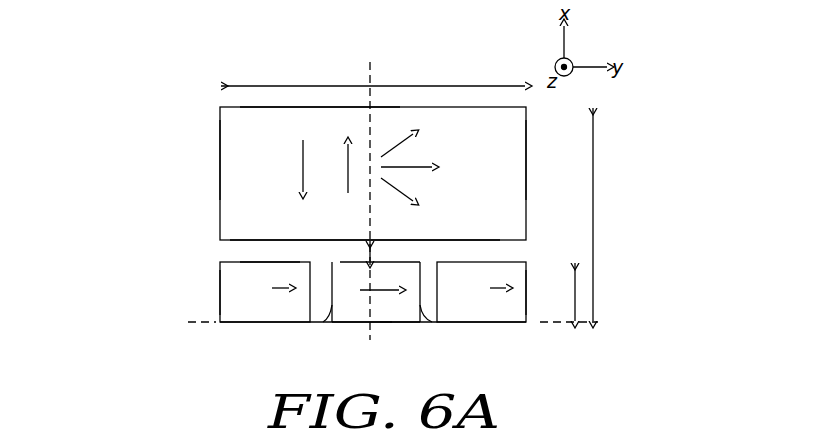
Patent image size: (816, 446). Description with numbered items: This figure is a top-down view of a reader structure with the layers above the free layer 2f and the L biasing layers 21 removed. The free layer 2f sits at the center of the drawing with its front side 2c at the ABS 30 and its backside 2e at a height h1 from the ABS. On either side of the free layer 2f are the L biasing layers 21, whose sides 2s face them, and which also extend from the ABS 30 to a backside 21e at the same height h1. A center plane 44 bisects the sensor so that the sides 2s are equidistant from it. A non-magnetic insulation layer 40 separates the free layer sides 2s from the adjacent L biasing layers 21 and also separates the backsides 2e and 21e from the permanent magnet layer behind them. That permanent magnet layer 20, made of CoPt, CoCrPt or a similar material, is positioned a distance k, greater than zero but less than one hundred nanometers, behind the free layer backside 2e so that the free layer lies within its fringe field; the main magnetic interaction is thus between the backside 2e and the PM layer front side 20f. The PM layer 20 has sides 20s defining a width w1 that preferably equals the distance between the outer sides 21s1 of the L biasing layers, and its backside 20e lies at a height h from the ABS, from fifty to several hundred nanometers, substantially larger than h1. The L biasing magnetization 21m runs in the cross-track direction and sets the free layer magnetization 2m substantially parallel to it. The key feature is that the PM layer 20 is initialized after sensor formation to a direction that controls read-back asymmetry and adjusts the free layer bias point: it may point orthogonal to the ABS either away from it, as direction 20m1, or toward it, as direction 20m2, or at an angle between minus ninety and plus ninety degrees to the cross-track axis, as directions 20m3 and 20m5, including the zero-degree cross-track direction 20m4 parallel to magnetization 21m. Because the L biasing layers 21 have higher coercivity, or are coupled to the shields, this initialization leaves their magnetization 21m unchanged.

The permanent magnet layer 20 is at (513, 199).
The PM layer backside 20e is at (240, 107).
The PM layer sides 20s is at (220, 148).
The PM layer front side 20f is at (265, 241).
The PM magnetization direction pointing away from ABS 20m1 is at (347, 156).
The PM magnetization direction pointing toward ABS 20m2 is at (302, 178).
The PM magnetization direction at positive angle to cross-track direction 20m3 is at (427, 139).
The PM magnetization direction in cross-track direction 20m4 is at (436, 168).
The PM magnetization direction at negative angle to cross-track direction 20m5 is at (424, 198).
The insulation layer 40 is at (265, 245).
The center plane 44 is at (370, 205).
The L biasing layers 21 is at (243, 312).
The L biasing layer backside 21e is at (250, 262).
The outer sides of L biasing layers 21s1 is at (220, 294).
The L biasing magnetization 21m is at (371, 281).
The free layer backside 2e is at (408, 262).
The free layer sides 2s is at (321, 268).
The free layer 2f is at (358, 322).
The free layer front side 2c is at (386, 322).
The free layer magnetization 2m is at (385, 278).
The ABS 30 is at (391, 326).
The PM layer width w1 is at (373, 81).
The PM layer backside height h is at (601, 214).
The backside height of free layer and L biasing layers h1 is at (565, 292).
The PM layer to free layer distance k is at (380, 250).